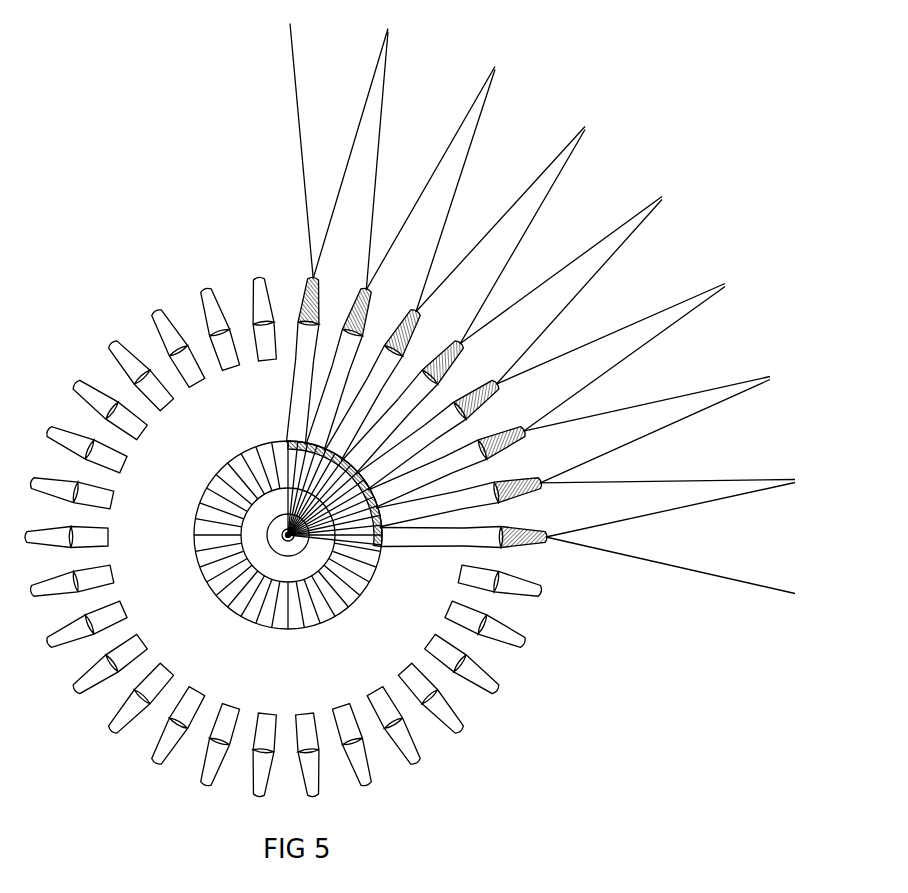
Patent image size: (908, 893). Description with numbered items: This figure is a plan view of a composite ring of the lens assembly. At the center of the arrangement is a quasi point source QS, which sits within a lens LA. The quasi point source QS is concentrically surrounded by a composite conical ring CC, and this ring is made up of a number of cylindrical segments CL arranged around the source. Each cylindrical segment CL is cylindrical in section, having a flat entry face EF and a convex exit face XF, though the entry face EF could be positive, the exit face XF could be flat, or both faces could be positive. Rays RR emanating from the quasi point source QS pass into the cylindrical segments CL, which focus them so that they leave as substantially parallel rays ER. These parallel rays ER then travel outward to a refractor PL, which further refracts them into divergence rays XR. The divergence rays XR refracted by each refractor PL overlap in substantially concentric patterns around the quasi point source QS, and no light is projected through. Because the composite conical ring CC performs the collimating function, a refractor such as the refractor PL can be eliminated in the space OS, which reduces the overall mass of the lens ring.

The divergence rays XR is at (601, 413).
The refractor lens PL is at (535, 516).
The rays RR is at (333, 538).
The quasi point source QS is at (269, 543).
The lens LA is at (248, 558).
The composite conical ring CC is at (351, 620).
The cylindrical segment CL is at (383, 549).
The substantially parallel rays ER is at (427, 533).
The entry face EF is at (489, 621).
The exit face XF is at (520, 644).
The space OS is at (472, 682).